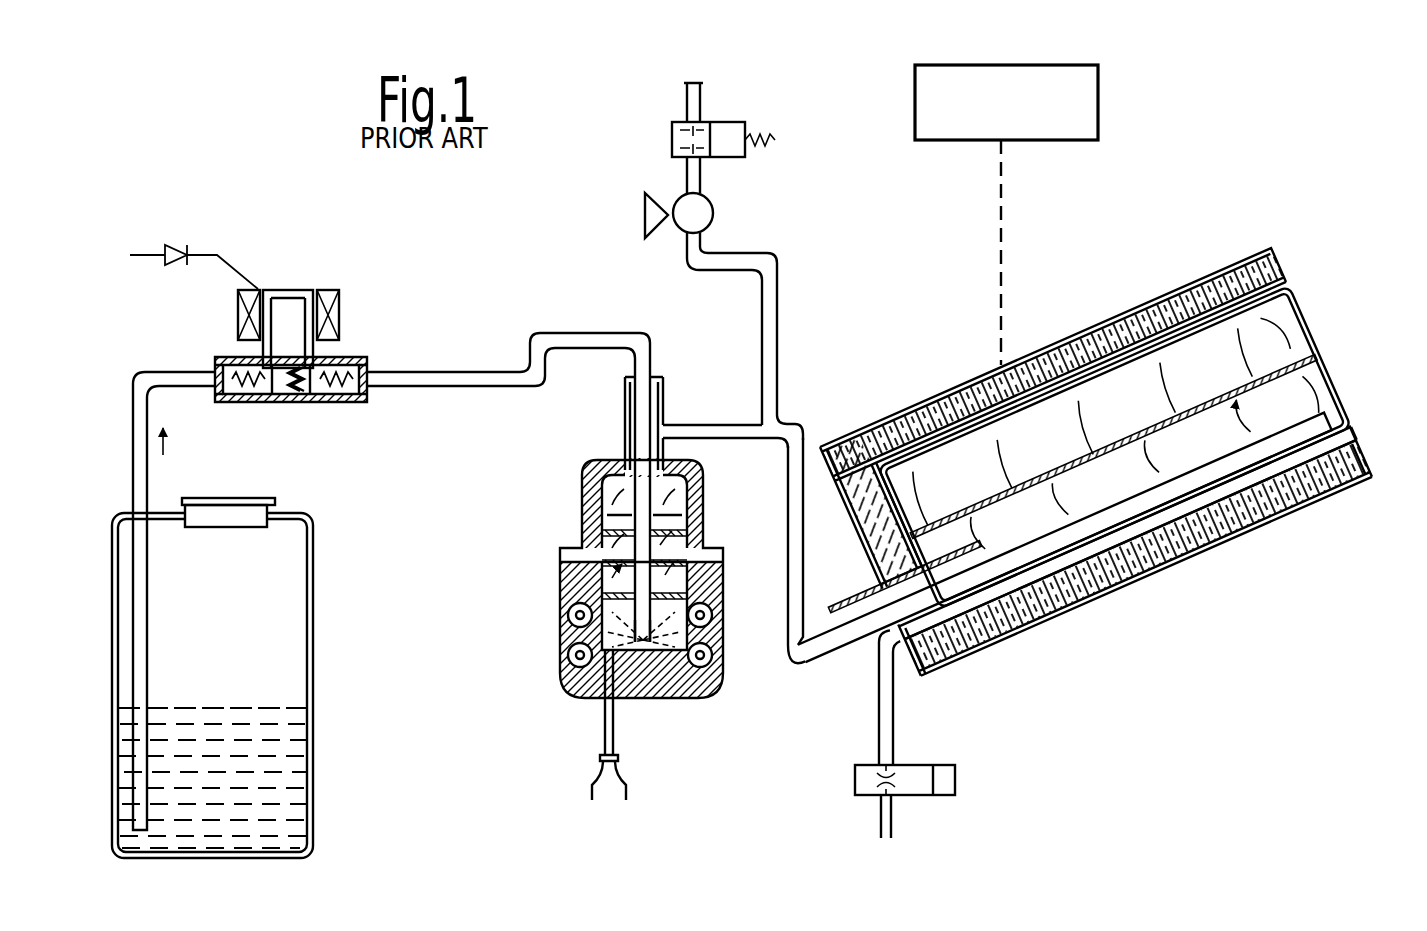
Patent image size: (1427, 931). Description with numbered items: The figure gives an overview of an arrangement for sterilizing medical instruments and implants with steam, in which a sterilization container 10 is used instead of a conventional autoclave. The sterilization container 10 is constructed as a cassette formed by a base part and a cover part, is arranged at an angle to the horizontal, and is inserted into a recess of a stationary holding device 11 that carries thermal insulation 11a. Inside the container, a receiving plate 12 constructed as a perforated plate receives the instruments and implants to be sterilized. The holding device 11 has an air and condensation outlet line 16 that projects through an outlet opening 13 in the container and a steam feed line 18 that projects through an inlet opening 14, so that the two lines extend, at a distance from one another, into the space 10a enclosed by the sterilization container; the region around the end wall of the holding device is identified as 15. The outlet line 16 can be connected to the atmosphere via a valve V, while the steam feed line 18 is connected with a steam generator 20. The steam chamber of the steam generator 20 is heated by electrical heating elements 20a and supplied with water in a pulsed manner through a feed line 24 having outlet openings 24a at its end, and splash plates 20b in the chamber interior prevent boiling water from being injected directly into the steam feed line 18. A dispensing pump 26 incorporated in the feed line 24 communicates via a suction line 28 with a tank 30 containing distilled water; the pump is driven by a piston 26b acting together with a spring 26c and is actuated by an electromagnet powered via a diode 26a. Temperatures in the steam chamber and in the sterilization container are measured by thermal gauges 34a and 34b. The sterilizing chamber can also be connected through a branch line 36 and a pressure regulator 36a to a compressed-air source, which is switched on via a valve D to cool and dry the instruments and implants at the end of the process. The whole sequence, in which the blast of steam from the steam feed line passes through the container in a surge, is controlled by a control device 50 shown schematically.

The sterilization container 10 is at (1068, 471).
The space enclosed by the sterilization container 10a is at (1114, 442).
The stationary holding device 11 is at (1077, 418).
The thermal insulation 11a is at (1114, 447).
The receiving plate 12 is at (1113, 446).
The outlet opening 13 is at (1065, 537).
The inlet opening 14 is at (1135, 551).
The end wall insulation 15 is at (871, 509).
The air and condensation outlet line 16 is at (876, 722).
The steam feed line 18 is at (793, 653).
The steam generator 20 is at (621, 613).
The electrical heating elements 20a is at (572, 613).
The splash plates 20b is at (664, 560).
The feed line 24 is at (595, 333).
The outlet openings 24a is at (653, 645).
The dispensing pump 26 is at (251, 322).
The diode 26a is at (172, 247).
The piston 26b is at (285, 322).
The spring 26c is at (288, 394).
The suction line 28 is at (143, 437).
The tank 30 is at (307, 632).
The thermal gauge 34a is at (904, 577).
The thermal gauge 34b is at (603, 727).
The branch line 36 is at (778, 290).
The pressure regulator 36a is at (714, 213).
The control device 50 is at (1098, 98).
The valve D is at (720, 122).
The valve V is at (933, 797).